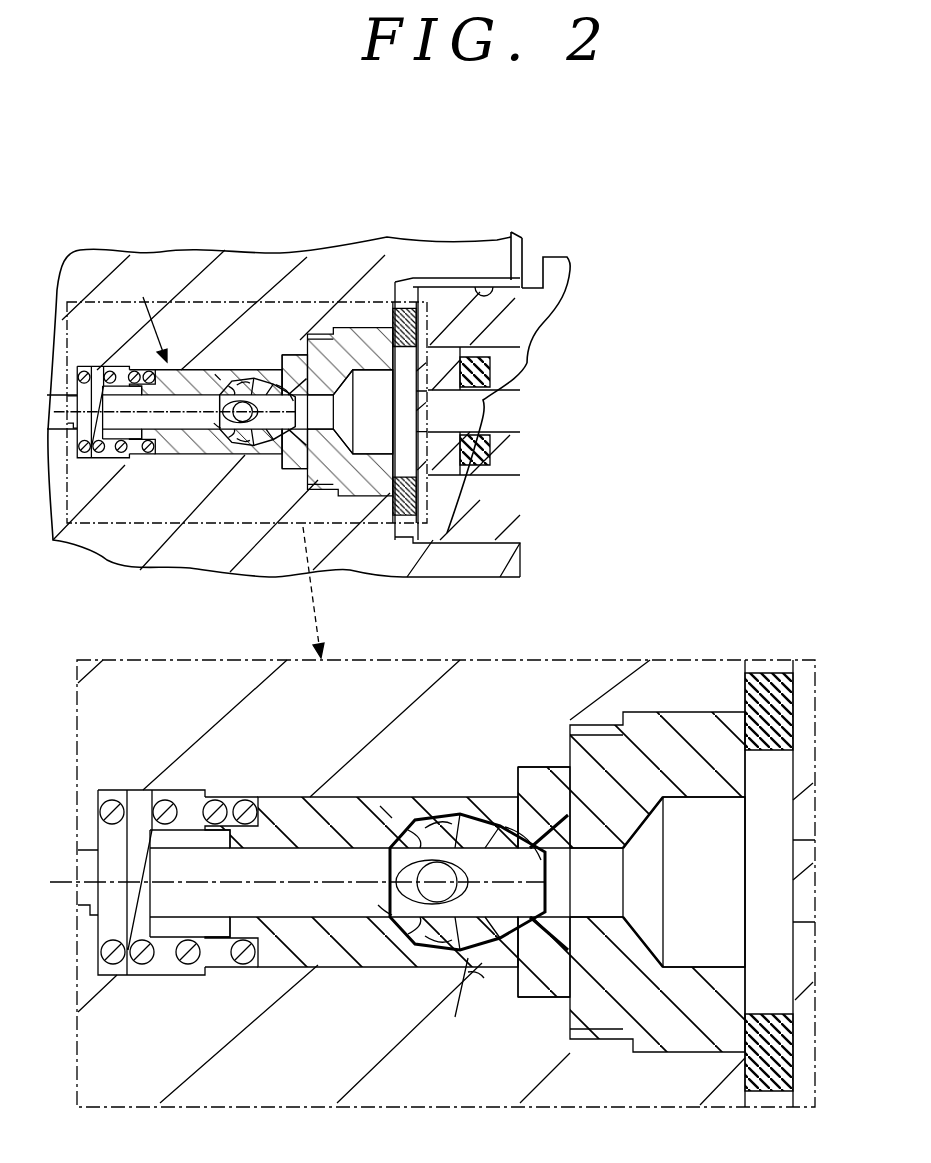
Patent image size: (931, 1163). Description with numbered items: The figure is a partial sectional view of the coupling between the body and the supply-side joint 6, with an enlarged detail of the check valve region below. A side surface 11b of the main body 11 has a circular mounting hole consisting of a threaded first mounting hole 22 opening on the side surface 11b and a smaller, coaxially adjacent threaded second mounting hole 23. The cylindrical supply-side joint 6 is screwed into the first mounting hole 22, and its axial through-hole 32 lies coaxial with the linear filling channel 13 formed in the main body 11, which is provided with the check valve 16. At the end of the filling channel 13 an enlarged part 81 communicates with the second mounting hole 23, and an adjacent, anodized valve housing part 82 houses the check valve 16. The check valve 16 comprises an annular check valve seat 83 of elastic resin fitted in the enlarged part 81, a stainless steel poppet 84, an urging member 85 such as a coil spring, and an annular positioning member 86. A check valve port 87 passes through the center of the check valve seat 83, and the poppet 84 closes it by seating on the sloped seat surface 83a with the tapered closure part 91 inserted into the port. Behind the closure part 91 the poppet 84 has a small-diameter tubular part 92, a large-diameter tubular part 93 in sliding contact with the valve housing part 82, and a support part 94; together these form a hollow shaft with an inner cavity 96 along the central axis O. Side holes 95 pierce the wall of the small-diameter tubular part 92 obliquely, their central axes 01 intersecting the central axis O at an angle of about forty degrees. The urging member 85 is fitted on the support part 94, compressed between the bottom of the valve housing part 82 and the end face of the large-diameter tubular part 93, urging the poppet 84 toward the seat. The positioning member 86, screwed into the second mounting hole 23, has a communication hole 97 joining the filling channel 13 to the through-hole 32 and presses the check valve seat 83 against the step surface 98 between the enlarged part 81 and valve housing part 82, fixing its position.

The main body 11 is at (238, 262).
The side surface 11b is at (525, 242).
The supply-side joint 6 is at (565, 283).
The filling channel 13 is at (78, 908).
The check valve 16 is at (147, 316).
The first mounting hole 22 is at (510, 280).
The second mounting hole 23 is at (705, 710).
The through-hole 32 is at (500, 354).
The enlarged part 81 is at (560, 770).
The valve housing part 82 is at (462, 800).
The check valve seat 83 is at (523, 770).
The sloped seat surface 83a is at (520, 847).
The poppet 84 is at (262, 797).
The urging member 85 is at (117, 790).
The positioning member 86 is at (728, 778).
The check valve port 87 is at (560, 867).
The closure part 91 is at (560, 940).
The small-diameter tubular part 92 is at (560, 968).
The large-diameter tubular part 93 is at (343, 967).
The support part 94 is at (214, 965).
The side holes 95 is at (424, 815).
The inner cavity 96 is at (232, 849).
The communication hole 97 is at (604, 910).
The step surface 98 is at (543, 998).
The central axis O is at (57, 882).
The central axes of the oblique holes 01 is at (383, 810).